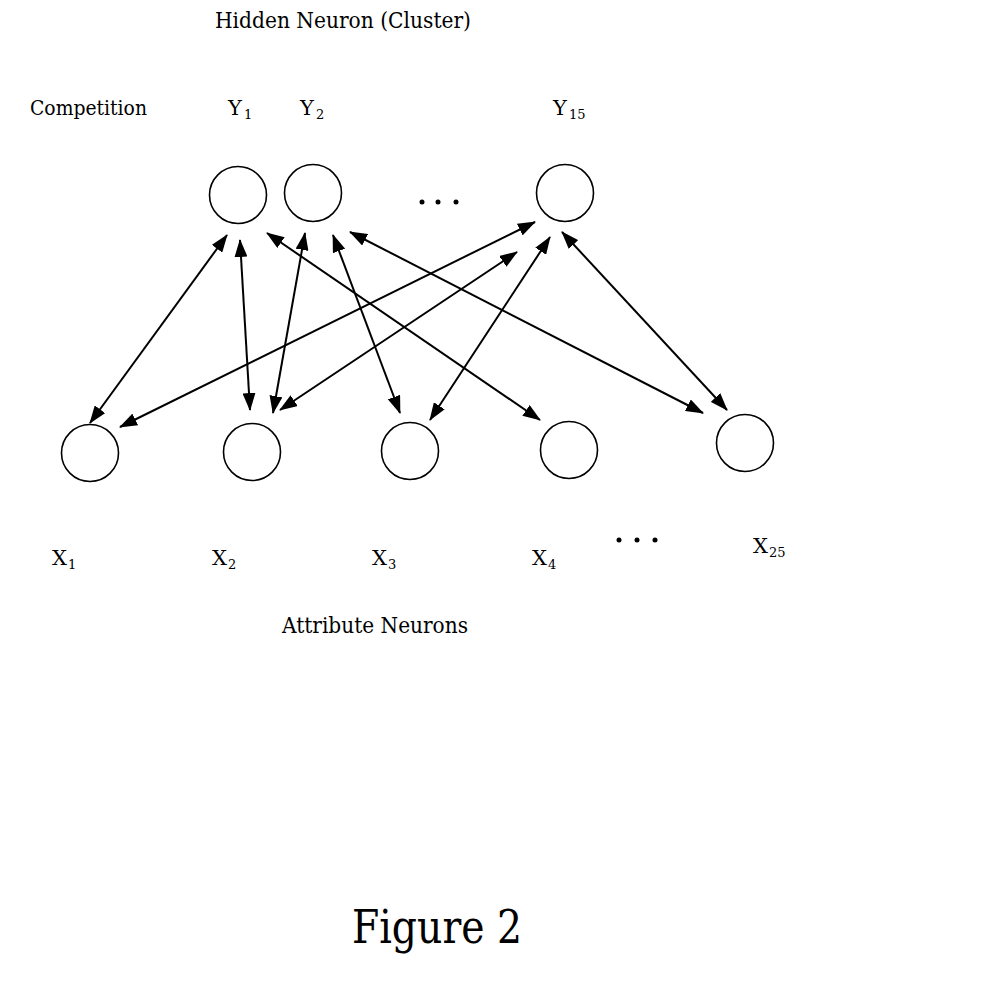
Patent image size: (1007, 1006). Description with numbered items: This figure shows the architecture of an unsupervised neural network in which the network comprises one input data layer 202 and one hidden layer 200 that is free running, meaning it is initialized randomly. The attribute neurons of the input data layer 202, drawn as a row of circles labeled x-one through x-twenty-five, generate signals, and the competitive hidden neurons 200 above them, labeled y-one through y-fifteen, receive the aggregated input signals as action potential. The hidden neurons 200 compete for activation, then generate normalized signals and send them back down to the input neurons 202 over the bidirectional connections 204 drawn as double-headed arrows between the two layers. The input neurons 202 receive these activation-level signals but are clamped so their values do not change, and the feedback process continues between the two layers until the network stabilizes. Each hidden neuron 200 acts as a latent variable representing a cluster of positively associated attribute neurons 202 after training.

The hidden layer 200 is at (619, 180).
The input data layer 202 is at (800, 445).
The bidirectional connections between attribute and hidden neurons 204 is at (491, 340).